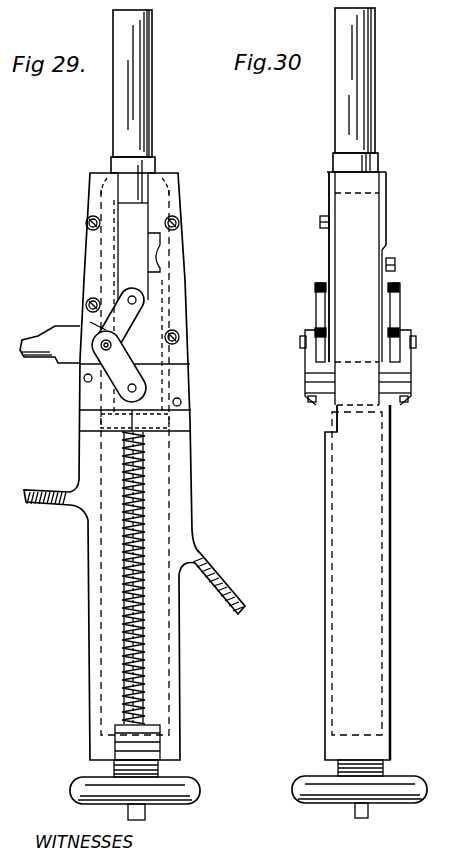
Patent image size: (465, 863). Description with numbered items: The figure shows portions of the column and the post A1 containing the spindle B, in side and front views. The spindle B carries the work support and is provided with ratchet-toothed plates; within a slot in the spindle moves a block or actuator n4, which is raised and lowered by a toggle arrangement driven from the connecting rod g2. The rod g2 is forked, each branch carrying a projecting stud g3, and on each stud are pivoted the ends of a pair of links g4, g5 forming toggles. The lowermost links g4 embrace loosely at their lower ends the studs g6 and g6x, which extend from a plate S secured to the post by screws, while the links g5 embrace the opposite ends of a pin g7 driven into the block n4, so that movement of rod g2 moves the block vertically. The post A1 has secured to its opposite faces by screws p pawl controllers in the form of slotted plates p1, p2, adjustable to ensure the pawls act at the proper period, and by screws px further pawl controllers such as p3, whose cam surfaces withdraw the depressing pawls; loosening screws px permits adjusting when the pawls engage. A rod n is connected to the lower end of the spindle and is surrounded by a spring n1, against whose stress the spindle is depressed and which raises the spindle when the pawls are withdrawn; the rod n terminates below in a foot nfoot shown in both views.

In FIG. 29, the spindle B is at (135, 92).
In FIG. 30, the spindle B is at (357, 68).
In FIG. 29, the post A1 is at (180, 478).
In FIG. 30, the post A1 is at (370, 478).
In FIG. 29, the screws p is at (179, 222).
In FIG. 30, the screws p is at (320, 223).
In FIG. 29, the screws px is at (85, 223).
In FIG. 29, the pawl controller plate p1 is at (186, 246).
In FIG. 30, the pawl controller plate p1 is at (334, 251).
In FIG. 30, the pawl controller plate p2 is at (397, 272).
In FIG. 29, the pawl controller p3 is at (84, 248).
In FIG. 29, the block or actuator n4 is at (130, 262).
In FIG. 29, the connecting rod g2 is at (28, 345).
In FIG. 29, the stud g3 is at (112, 345).
In FIG. 30, the stud g3 is at (300, 341).
In FIG. 30, the link g4 is at (305, 374).
In FIG. 29, the link g5 is at (92, 320).
In FIG. 30, the link g5 is at (316, 318).
In FIG. 30, the stud g6 is at (308, 391).
In FIG. 29, the stud g6x is at (137, 388).
In FIG. 29, the pin g7 is at (137, 299).
In FIG. 30, the pin g7 is at (316, 312).
In FIG. 29, the rod n is at (124, 545).
In FIG. 30, the rod n is at (370, 809).
In FIG. 29, the spring n1 is at (124, 590).
In FIG. 29, the foot nfoot is at (146, 811).
In FIG. 30, the plate S is at (338, 408).